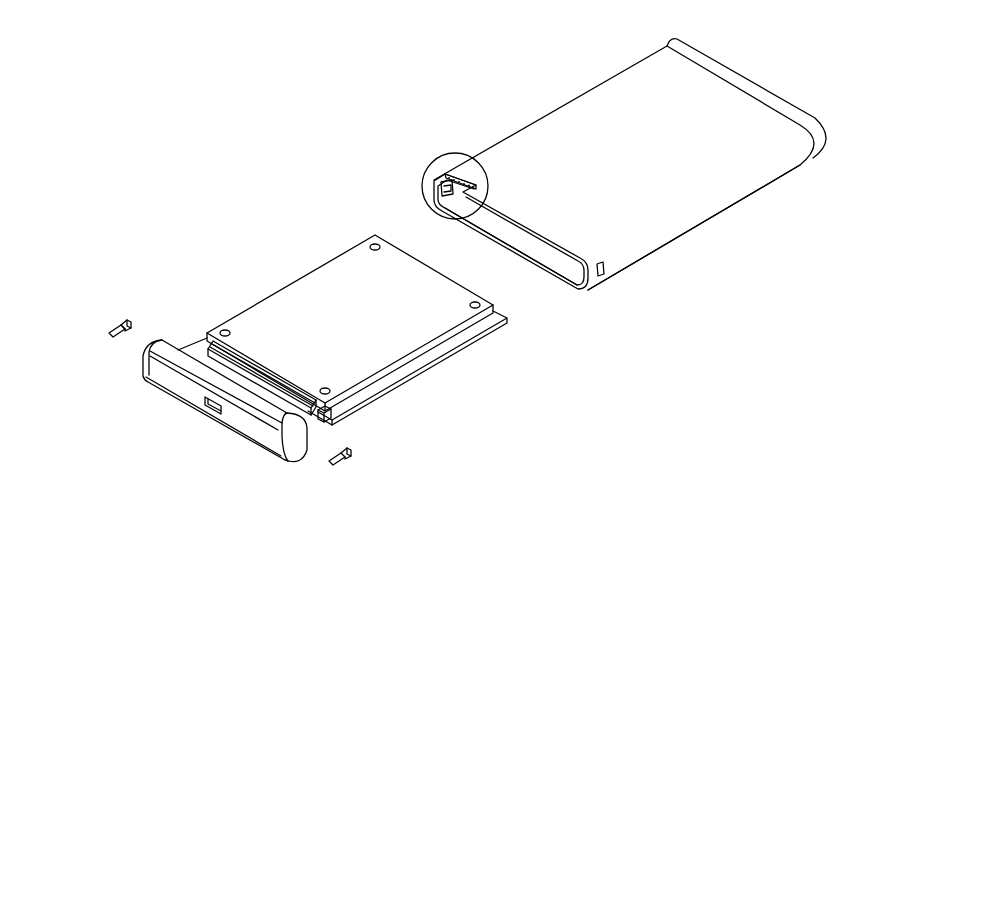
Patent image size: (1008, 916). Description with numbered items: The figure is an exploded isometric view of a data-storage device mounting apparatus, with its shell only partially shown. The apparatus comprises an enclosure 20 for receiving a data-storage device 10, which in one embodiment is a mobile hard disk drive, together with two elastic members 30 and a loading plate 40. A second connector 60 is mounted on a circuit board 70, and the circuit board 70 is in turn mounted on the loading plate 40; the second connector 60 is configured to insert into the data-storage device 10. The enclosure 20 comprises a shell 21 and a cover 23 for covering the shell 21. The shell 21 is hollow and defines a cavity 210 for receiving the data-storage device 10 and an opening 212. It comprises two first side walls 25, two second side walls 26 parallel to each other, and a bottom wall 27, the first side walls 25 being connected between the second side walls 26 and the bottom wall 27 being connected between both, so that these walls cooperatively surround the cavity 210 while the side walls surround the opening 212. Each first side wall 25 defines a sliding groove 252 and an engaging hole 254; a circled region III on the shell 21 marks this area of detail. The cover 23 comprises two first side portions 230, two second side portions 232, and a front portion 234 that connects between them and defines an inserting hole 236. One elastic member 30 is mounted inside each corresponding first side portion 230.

The enclosure 20 is at (422, 59).
The shell 21 is at (497, 113).
The cover 23 is at (159, 312).
The first side wall 25 is at (748, 187).
The second side wall 26 is at (618, 105).
The bottom wall 27 is at (742, 83).
The cavity 210 is at (519, 238).
The opening 212 is at (578, 290).
The sliding groove 252 is at (426, 191).
The engaging hole 254 is at (606, 268).
The elastic member 30 is at (122, 323).
The data-storage device 10 is at (417, 332).
The loading plate 40 is at (398, 388).
The second connector 60 is at (243, 367).
The circuit board 70 is at (318, 418).
The second side portion 232 is at (178, 347).
The front portion 234 is at (170, 380).
The inserting hole 236 is at (207, 413).
The first side portion 230 is at (300, 446).
The detail view circle III is at (440, 145).